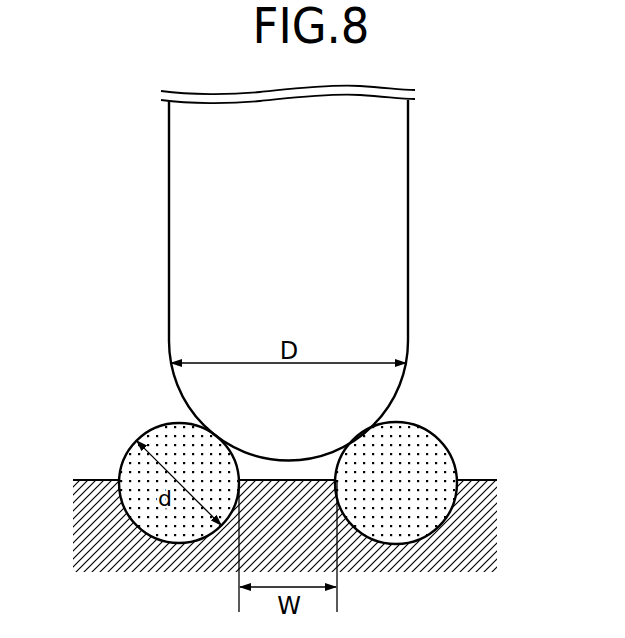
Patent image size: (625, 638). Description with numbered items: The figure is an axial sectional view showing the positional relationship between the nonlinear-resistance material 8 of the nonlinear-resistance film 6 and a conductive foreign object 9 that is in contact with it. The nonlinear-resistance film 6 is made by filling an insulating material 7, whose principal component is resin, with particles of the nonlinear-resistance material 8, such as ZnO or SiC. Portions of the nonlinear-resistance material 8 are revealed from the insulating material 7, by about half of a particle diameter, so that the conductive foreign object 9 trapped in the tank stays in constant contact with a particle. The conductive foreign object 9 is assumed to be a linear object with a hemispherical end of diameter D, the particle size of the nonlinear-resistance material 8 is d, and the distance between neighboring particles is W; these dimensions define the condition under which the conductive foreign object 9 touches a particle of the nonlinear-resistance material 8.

The conductive foreign object 9 is at (390, 214).
The nonlinear-resistance film 6 is at (285, 437).
The insulating material 7 is at (484, 480).
The nonlinear-resistance material 8 is at (438, 450).